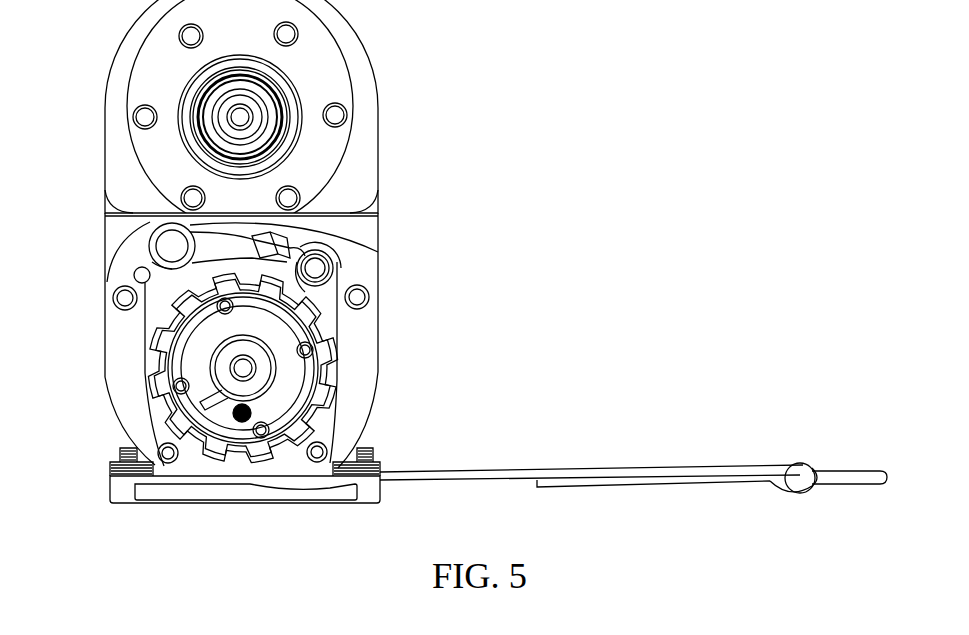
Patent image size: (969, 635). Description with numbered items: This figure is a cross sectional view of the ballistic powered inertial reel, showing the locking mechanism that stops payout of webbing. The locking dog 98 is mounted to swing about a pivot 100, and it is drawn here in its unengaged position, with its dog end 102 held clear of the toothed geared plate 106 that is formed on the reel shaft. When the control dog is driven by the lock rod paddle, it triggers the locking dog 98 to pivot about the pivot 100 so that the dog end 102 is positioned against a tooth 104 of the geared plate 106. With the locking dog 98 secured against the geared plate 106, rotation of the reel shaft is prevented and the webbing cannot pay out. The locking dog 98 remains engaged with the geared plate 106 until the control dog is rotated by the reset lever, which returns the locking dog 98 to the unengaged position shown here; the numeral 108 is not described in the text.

The locking dog 98 is at (297, 202).
The pivot 100 is at (150, 242).
The dog end 102 is at (340, 240).
The tooth 104 is at (342, 358).
The geared plate 106 is at (368, 405).
The pawl pivot 108 is at (340, 267).